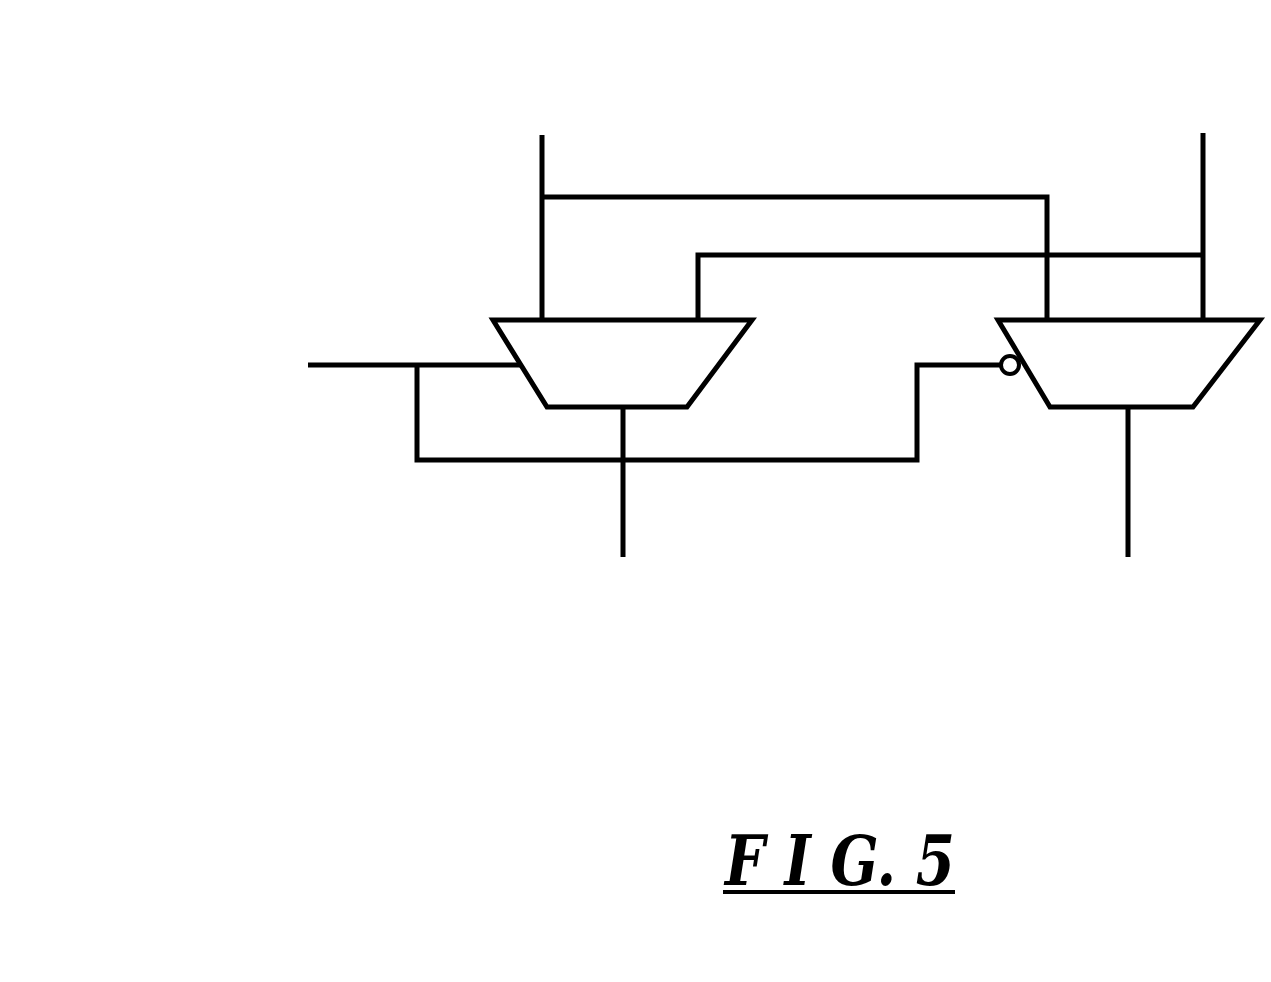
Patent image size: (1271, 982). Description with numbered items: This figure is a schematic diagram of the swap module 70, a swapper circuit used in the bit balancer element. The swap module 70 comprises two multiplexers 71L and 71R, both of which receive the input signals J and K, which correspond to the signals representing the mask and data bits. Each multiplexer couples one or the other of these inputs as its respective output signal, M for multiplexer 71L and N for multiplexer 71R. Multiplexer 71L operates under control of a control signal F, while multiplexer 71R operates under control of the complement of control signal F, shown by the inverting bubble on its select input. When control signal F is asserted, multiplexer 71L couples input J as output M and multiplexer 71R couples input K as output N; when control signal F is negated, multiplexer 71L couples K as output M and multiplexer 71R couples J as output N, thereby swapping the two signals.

The swap module 70 is at (656, 337).
The multiplexer 71L is at (622, 363).
The multiplexer 71R is at (1129, 363).